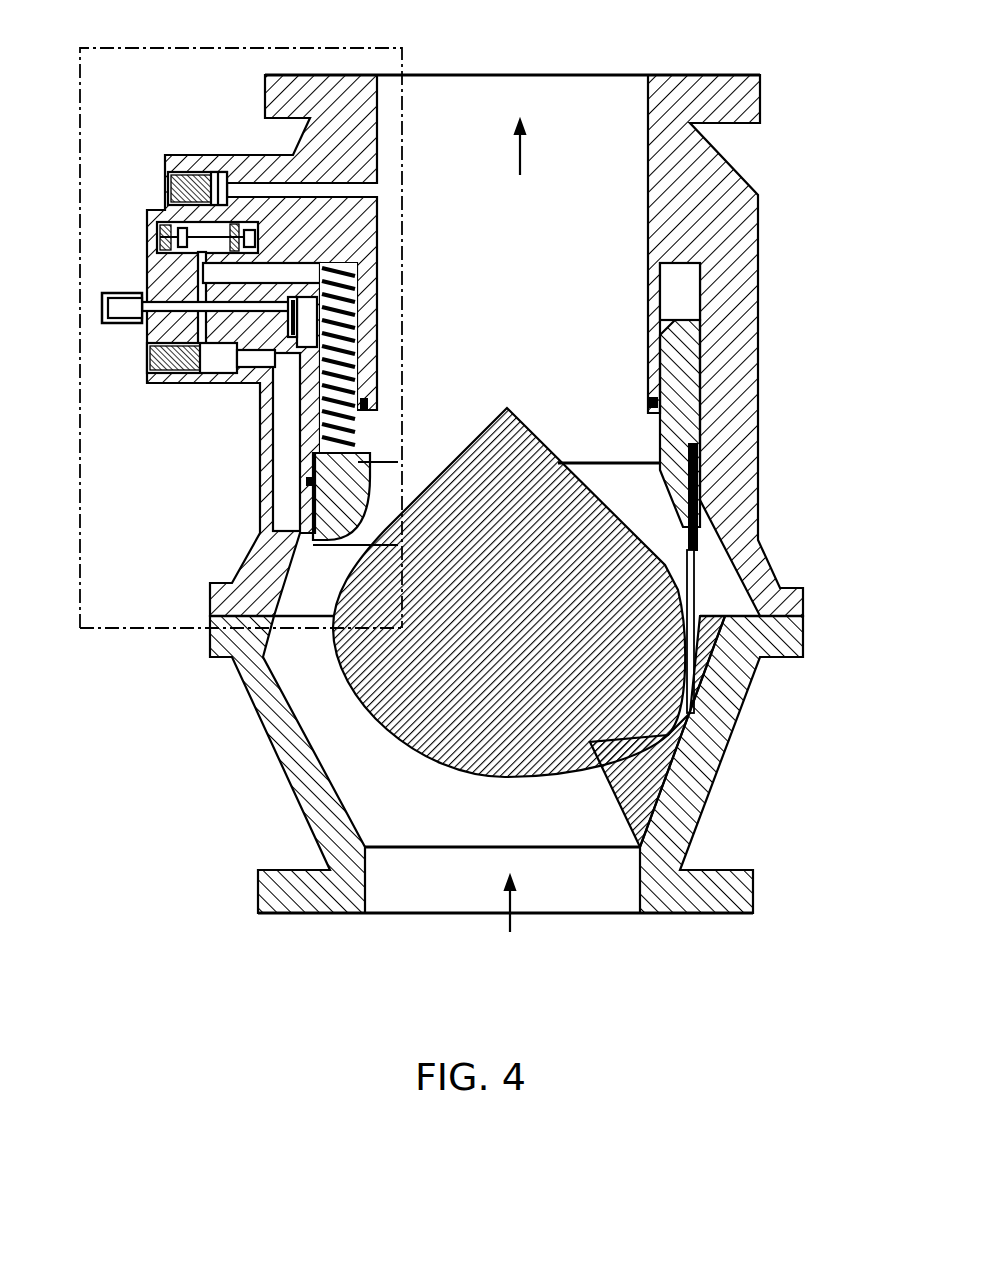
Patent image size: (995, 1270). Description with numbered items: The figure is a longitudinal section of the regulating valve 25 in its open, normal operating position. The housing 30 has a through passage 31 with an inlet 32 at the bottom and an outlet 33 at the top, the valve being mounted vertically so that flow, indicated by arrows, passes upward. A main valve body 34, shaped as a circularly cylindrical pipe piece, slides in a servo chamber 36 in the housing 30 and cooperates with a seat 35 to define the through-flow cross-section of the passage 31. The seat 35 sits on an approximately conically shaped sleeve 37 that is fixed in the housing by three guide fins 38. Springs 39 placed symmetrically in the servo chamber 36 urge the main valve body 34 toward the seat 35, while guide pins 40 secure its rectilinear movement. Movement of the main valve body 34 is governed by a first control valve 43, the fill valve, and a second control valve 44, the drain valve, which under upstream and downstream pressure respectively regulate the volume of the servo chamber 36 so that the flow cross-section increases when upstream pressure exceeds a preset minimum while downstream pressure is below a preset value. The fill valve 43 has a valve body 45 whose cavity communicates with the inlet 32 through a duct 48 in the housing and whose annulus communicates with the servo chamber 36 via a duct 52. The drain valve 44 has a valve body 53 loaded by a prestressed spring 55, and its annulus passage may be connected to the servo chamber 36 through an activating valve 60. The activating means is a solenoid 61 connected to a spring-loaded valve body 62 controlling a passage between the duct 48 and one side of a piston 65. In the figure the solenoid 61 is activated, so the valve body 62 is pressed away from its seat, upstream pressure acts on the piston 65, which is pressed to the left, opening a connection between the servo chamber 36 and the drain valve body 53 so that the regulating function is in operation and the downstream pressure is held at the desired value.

The regulating valve 25 is at (205, 712).
The housing 30 is at (738, 376).
The through passage 31 is at (337, 760).
The inlet 32 is at (567, 900).
The outlet 33 is at (592, 82).
The main valve body 34 is at (305, 481).
The seat 35 is at (340, 582).
The servo chamber 36 is at (660, 298).
The sleeve 37 is at (443, 740).
The guide fins 38 is at (620, 788).
The springs 39 is at (358, 304).
The guide pins 40 is at (698, 578).
The first control valve 43 is at (181, 390).
The second control valve 44 is at (164, 156).
The valve body 45 is at (178, 373).
The duct 48 is at (272, 447).
The duct 52 is at (292, 278).
The valve body 53 is at (215, 156).
The prestressed spring 55 is at (183, 172).
The activating valve 60 is at (202, 226).
The solenoid 61 is at (122, 293).
The spring-loaded valve body 62 is at (294, 344).
The piston 65 is at (250, 231).